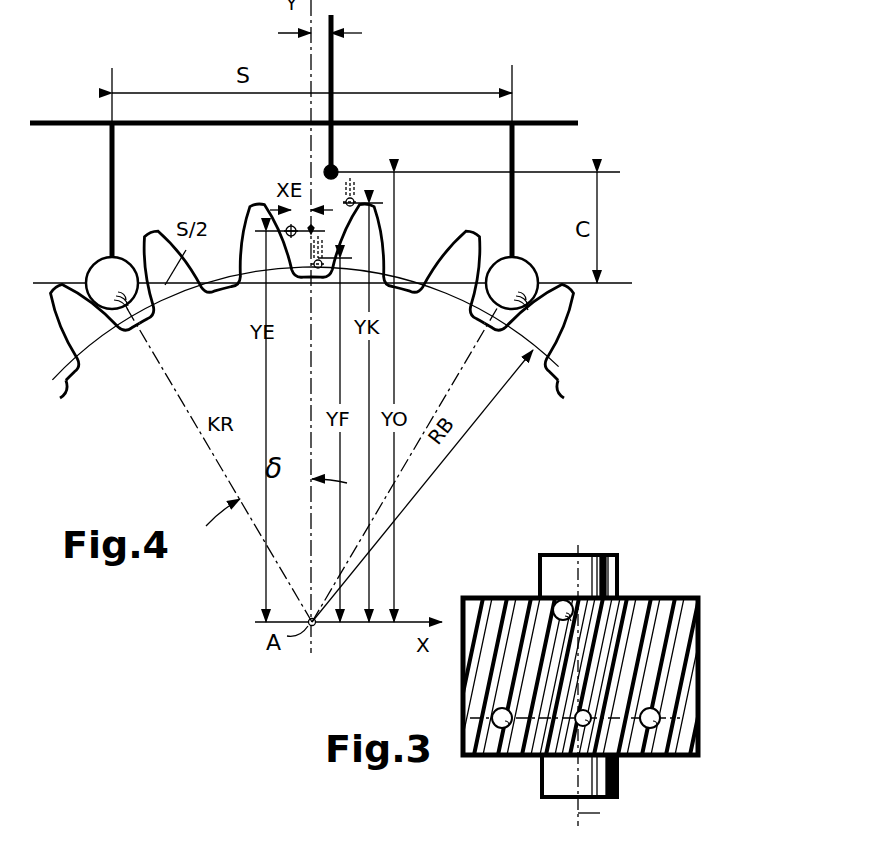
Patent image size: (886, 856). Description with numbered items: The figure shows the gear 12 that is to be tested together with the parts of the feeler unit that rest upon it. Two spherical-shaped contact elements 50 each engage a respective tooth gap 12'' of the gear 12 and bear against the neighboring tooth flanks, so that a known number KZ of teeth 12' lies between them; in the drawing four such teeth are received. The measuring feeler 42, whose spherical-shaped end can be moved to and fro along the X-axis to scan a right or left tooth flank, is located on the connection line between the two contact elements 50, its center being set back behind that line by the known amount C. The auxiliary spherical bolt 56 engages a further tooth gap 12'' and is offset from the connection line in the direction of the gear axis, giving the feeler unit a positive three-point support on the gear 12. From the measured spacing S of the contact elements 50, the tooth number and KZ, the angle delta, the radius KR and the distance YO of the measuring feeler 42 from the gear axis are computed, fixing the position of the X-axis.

In FIG. 3, the gear 12 is at (586, 677).
In FIG. 4, the teeth 12' is at (318, 341).
In FIG. 4, the tooth gap 12'' is at (294, 300).
In FIG. 4, the measuring feeler 42 is at (338, 168).
In FIG. 3, the measuring feeler 42 is at (590, 714).
In FIG. 4, the contact elements 50 is at (100, 270).
In FIG. 3, the contact elements 50 is at (500, 728).
In FIG. 3, the auxiliary spherical bolt 56 is at (558, 601).